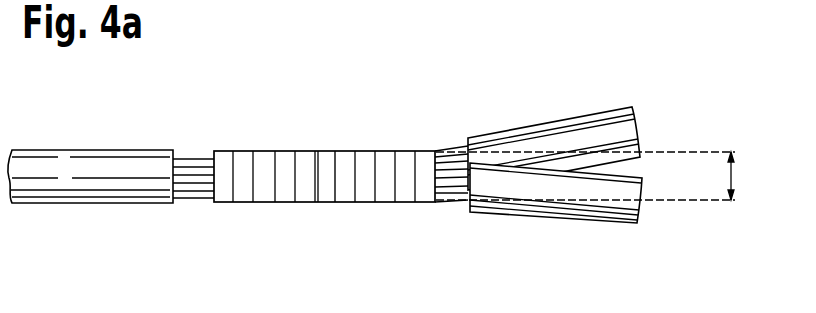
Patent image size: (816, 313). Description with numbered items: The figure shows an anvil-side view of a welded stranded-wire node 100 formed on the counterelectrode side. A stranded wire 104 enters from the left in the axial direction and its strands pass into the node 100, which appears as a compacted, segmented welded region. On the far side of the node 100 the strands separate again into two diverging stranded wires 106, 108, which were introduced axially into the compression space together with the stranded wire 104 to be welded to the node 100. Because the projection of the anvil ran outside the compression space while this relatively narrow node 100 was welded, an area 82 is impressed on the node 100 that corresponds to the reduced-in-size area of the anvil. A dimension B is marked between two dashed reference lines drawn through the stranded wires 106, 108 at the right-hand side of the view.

The stranded wire 104 is at (93, 170).
The node 100 is at (305, 168).
The impressed area 82 is at (337, 183).
The stranded wire 106 is at (583, 132).
The stranded wire 108 is at (553, 185).
The cable diameter B is at (733, 176).